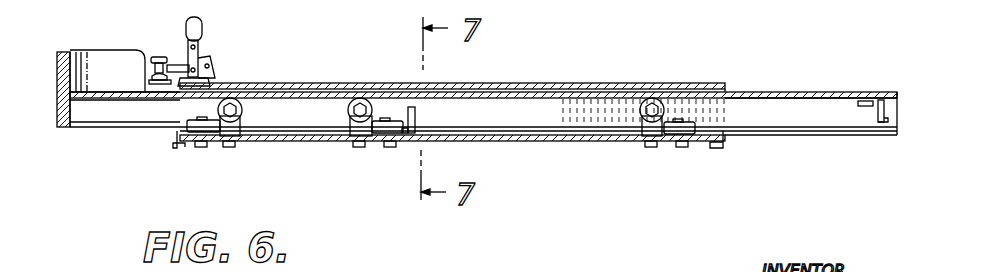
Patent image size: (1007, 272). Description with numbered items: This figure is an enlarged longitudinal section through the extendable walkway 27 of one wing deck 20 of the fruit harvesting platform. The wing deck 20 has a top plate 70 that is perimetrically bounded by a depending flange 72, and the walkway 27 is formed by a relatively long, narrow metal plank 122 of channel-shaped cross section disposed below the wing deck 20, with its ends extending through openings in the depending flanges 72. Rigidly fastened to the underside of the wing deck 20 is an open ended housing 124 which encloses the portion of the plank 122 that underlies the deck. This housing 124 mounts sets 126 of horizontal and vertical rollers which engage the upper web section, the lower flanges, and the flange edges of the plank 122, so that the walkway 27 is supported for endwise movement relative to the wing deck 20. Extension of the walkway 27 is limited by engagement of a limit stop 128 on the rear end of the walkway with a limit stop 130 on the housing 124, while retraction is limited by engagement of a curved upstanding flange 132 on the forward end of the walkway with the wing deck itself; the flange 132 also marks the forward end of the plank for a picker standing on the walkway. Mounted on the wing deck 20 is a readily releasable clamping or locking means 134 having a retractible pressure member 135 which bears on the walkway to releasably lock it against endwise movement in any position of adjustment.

The wing deck 20 is at (531, 79).
The extendable walkway 27 is at (748, 89).
The top plate 70 is at (603, 84).
The depending flange 72 is at (178, 136).
The metal plank 122 is at (796, 93).
The open ended housing 124 is at (571, 136).
The sets of horizontal and vertical rollers 126 is at (205, 110).
The limit stop 128 is at (878, 123).
The limit stop 130 is at (418, 117).
The curved upstanding flange 132 is at (94, 56).
The releasable clamping or locking means 134 is at (208, 51).
The retractible pressure member 135 is at (157, 89).